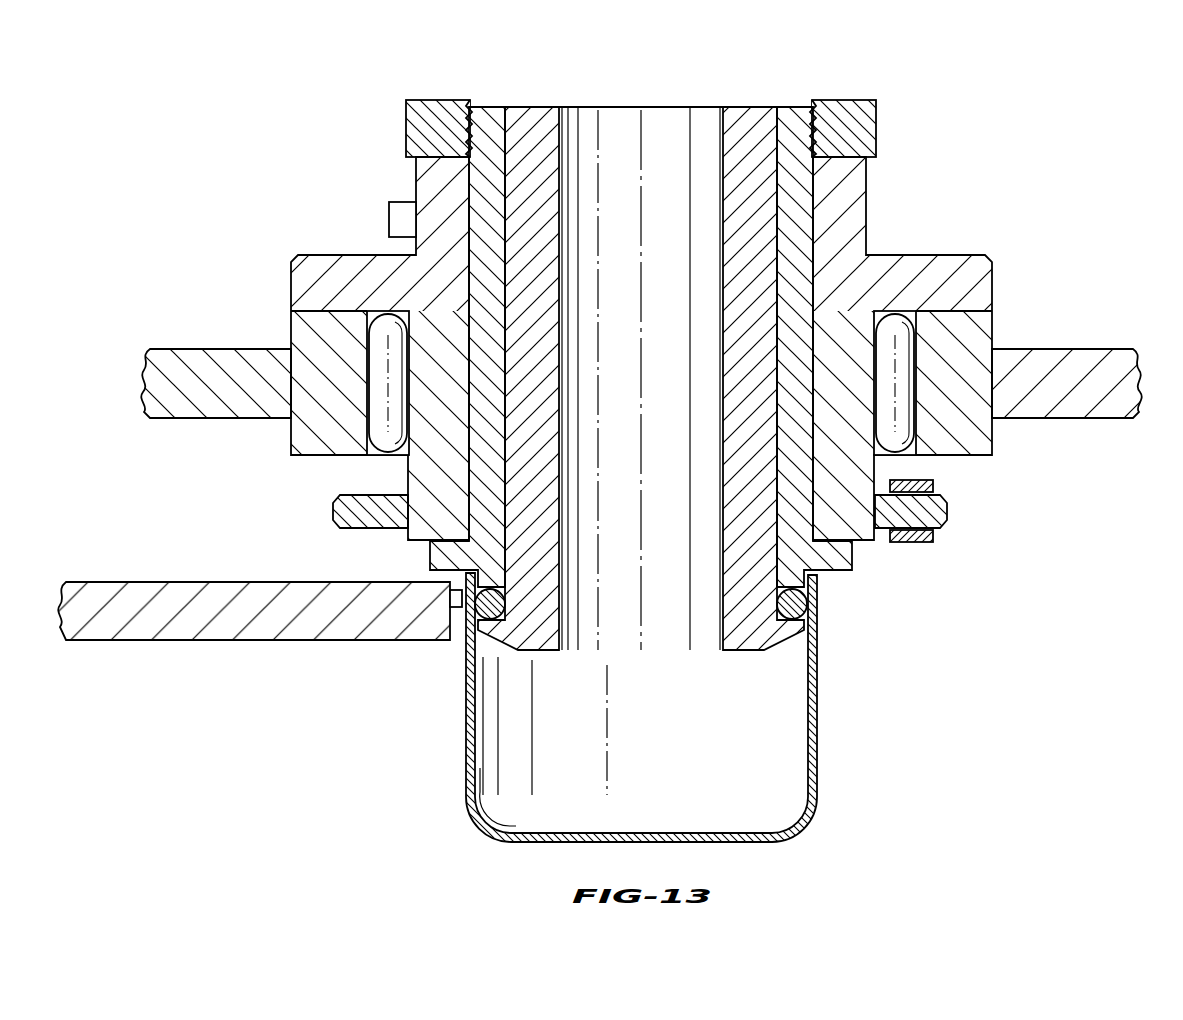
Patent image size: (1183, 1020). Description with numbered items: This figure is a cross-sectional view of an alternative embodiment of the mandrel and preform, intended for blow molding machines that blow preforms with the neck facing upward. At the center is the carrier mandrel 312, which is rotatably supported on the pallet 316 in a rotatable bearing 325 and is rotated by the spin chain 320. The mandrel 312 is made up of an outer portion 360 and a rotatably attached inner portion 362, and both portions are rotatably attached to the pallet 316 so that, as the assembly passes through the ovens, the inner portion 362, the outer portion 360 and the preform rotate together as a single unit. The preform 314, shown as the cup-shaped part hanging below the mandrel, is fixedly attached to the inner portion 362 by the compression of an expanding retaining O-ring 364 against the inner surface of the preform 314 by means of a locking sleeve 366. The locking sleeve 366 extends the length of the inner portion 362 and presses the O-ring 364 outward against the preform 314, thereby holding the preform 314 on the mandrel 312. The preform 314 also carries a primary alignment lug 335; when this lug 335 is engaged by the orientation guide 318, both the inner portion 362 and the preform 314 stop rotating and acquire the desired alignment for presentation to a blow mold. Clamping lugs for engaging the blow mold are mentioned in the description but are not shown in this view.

The carrier mandrel 312 is at (755, 84).
The preform 314 is at (818, 746).
The pallet 316 is at (1093, 348).
The orientation guide 318 is at (208, 633).
The spin chain 320 is at (933, 483).
The rotatable bearing 325 is at (903, 347).
The primary alignment lug 335 is at (462, 608).
The outer portion 360 is at (928, 252).
The inner portion 362 is at (485, 107).
The retaining O-ring 364 is at (807, 603).
The locking sleeve 366 is at (537, 107).